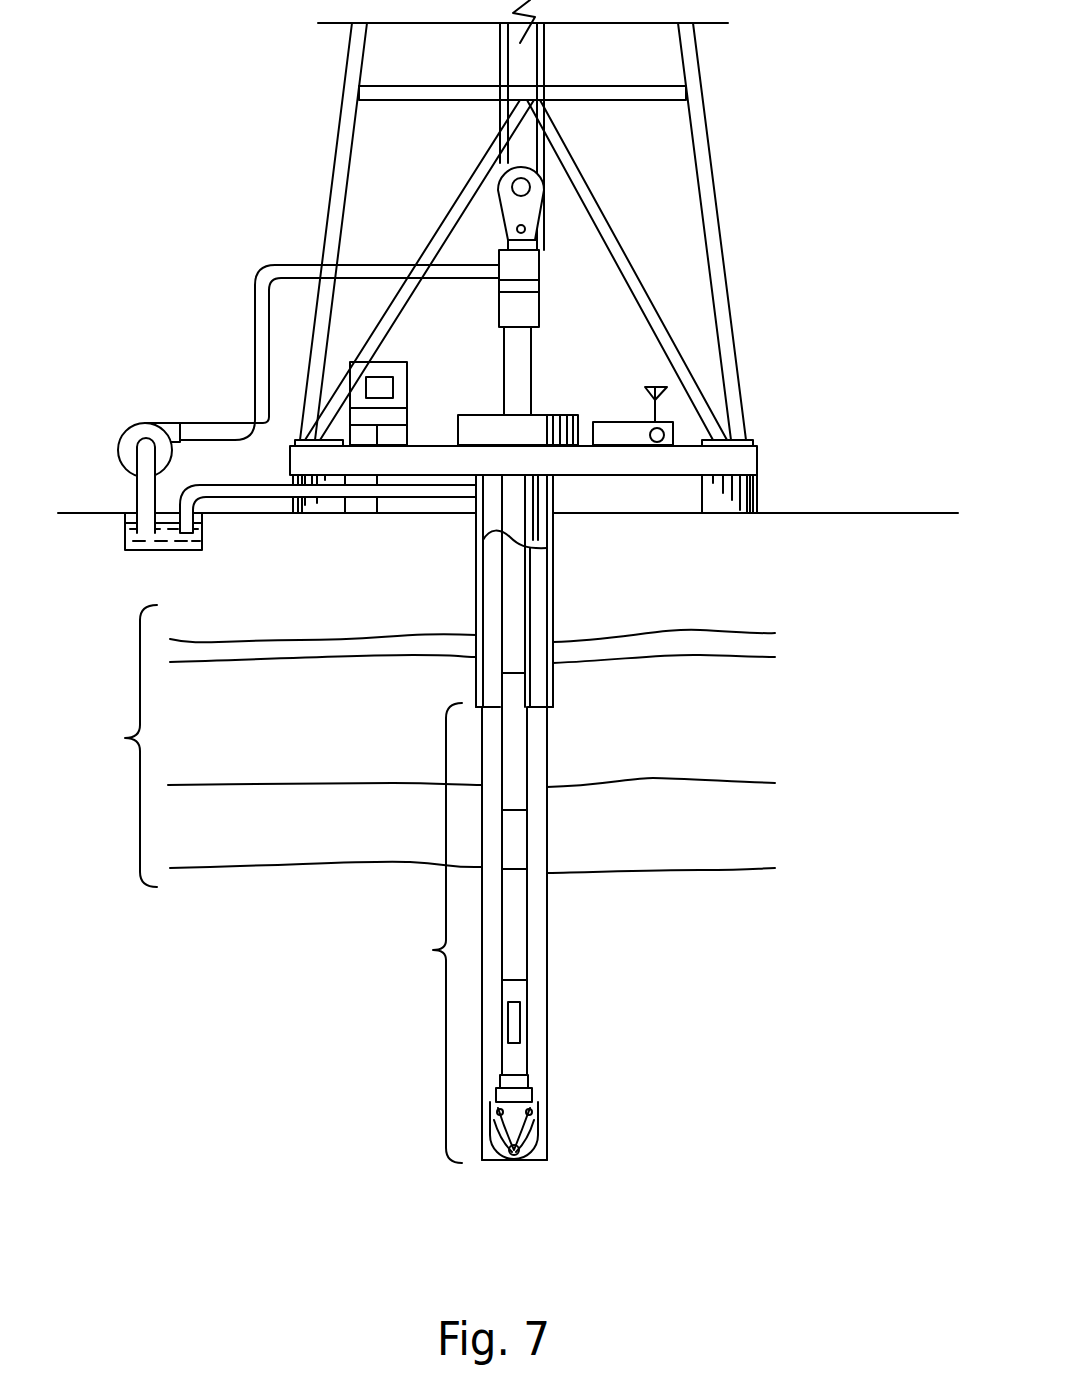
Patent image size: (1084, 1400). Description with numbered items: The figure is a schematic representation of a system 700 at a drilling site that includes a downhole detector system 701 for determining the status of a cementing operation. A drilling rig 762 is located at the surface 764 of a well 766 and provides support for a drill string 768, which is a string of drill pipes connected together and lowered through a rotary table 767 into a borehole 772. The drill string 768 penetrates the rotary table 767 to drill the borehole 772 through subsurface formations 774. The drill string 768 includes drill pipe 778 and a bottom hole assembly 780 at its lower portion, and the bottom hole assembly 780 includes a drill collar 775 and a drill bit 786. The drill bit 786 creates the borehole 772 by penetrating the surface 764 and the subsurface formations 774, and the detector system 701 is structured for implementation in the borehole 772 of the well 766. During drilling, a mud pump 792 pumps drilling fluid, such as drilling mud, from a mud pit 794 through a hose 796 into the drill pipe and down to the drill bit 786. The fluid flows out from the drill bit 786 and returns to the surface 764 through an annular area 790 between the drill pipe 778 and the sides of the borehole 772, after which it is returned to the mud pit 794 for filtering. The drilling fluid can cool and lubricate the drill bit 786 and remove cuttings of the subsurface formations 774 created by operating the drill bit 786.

The system 700 is at (256, 58).
The downhole detector system 701 is at (515, 1022).
The drilling rig 762 is at (716, 128).
The surface 764 is at (792, 512).
The well 766 is at (564, 505).
The rotary table 767 is at (493, 415).
The drill string 768 is at (536, 574).
The borehole 772 is at (542, 641).
The subsurface formations 774 is at (423, 746).
The drill collar 775 is at (518, 843).
The drill pipe 778 is at (527, 728).
The bottom hole assembly 780 is at (419, 933).
The drill bit 786 is at (533, 1123).
The annular area 790 is at (537, 770).
The mud pump 792 is at (153, 420).
The mud pit 794 is at (130, 517).
The hose 796 is at (255, 342).